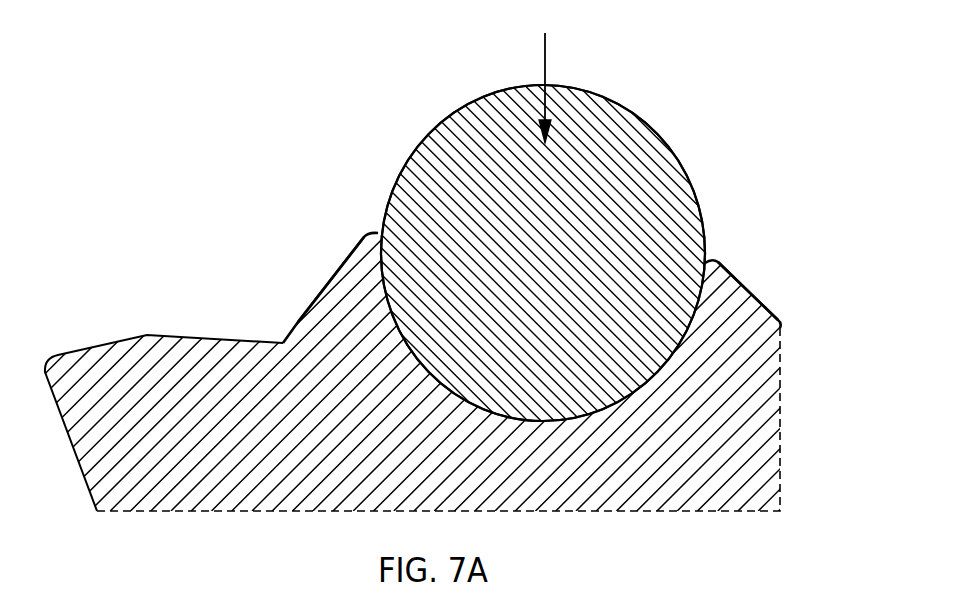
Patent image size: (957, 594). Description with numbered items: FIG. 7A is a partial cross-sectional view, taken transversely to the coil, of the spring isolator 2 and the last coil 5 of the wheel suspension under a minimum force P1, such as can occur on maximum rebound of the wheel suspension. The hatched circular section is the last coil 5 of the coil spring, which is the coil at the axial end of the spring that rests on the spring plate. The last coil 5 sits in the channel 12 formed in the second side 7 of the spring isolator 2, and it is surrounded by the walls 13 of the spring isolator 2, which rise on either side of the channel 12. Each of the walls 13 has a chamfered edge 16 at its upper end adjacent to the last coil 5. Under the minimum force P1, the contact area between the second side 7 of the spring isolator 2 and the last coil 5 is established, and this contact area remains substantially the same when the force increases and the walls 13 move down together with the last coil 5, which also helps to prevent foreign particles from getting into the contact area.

The spring isolator 2 is at (478, 381).
The last coil 5 is at (662, 165).
The second side 7 is at (92, 347).
The channel 12 is at (632, 427).
The walls 13 is at (327, 336).
The chamfered edge 16 is at (339, 257).
The minimum force P1 is at (545, 50).